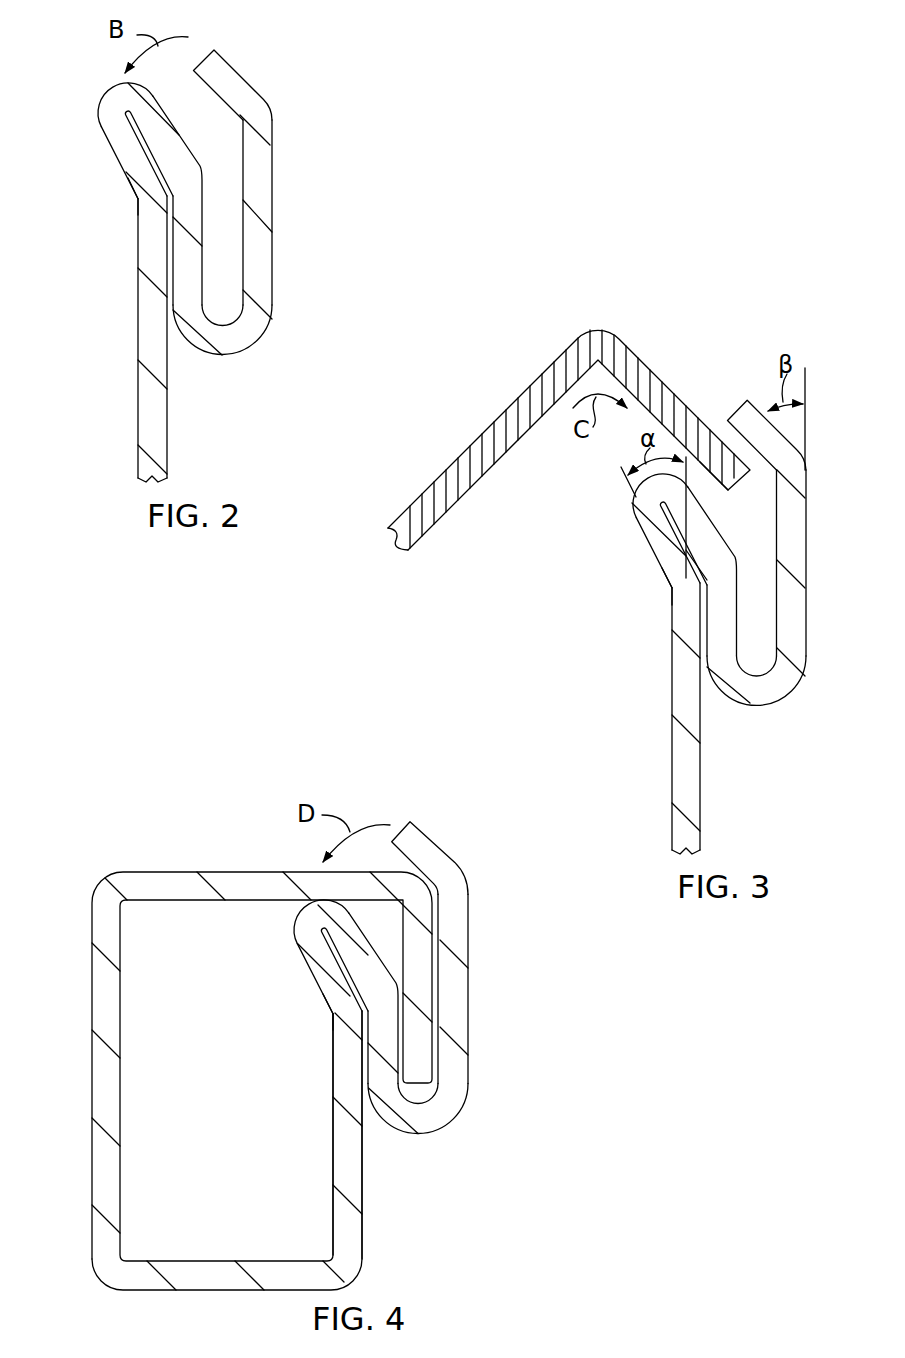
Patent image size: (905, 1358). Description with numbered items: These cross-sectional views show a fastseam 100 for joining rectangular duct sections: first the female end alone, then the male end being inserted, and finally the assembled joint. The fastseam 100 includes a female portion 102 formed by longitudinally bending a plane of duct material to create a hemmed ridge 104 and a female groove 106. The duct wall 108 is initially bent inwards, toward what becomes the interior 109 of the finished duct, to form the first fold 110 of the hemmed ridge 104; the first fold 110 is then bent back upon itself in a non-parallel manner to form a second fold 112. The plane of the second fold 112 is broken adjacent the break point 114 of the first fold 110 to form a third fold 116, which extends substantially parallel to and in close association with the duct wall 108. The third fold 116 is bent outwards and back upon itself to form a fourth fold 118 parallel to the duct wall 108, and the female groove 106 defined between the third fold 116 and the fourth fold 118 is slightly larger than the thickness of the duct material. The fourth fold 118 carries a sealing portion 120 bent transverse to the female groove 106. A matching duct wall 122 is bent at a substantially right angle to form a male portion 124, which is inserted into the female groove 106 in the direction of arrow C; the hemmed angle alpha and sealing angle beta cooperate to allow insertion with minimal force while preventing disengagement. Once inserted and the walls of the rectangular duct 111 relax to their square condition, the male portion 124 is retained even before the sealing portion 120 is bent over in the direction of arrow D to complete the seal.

In FIG. 2, the fastseam 100 is at (303, 203).
In FIG. 3, the fastseam 100 is at (545, 642).
In FIG. 4, the fastseam 100 is at (243, 1063).
In FIG. 2, the female portion 102 is at (260, 276).
In FIG. 3, the female portion 102 is at (788, 632).
In FIG. 4, the female portion 102 is at (458, 1067).
In FIG. 2, the hemmed ridge 104 is at (106, 128).
In FIG. 3, the hemmed ridge 104 is at (637, 520).
In FIG. 4, the hemmed ridge 104 is at (296, 923).
In FIG. 2, the female groove 106 is at (232, 304).
In FIG. 3, the female groove 106 is at (763, 667).
In FIG. 4, the female groove 106 is at (423, 1093).
In FIG. 2, the duct wall 108 is at (147, 360).
In FIG. 3, the duct wall 108 is at (682, 753).
In FIG. 4, the duct wall 108 is at (343, 1207).
In FIG. 4, the interior 109 is at (258, 1165).
In FIG. 2, the first fold 110 is at (129, 162).
In FIG. 3, the first fold 110 is at (664, 560).
In FIG. 4, the first fold 110 is at (330, 978).
In FIG. 4, the rectangular duct 111 is at (108, 1190).
In FIG. 2, the second fold 112 is at (168, 147).
In FIG. 3, the second fold 112 is at (705, 538).
In FIG. 4, the second fold 112 is at (343, 938).
In FIG. 2, the break point 114 is at (137, 196).
In FIG. 3, the break point 114 is at (670, 590).
In FIG. 4, the break point 114 is at (332, 1012).
In FIG. 2, the third fold 116 is at (187, 253).
In FIG. 3, the third fold 116 is at (715, 637).
In FIG. 4, the third fold 116 is at (380, 1067).
In FIG. 2, the fourth fold 118 is at (260, 238).
In FIG. 3, the fourth fold 118 is at (797, 572).
In FIG. 4, the fourth fold 118 is at (462, 948).
In FIG. 2, the sealing portion 120 is at (241, 77).
In FIG. 3, the sealing portion 120 is at (753, 420).
In FIG. 4, the sealing portion 120 is at (427, 855).
In FIG. 3, the matching duct wall 122 is at (462, 475).
In FIG. 4, the matching duct wall 122 is at (168, 880).
In FIG. 3, the male portion 124 is at (673, 405).
In FIG. 4, the male portion 124 is at (423, 1020).